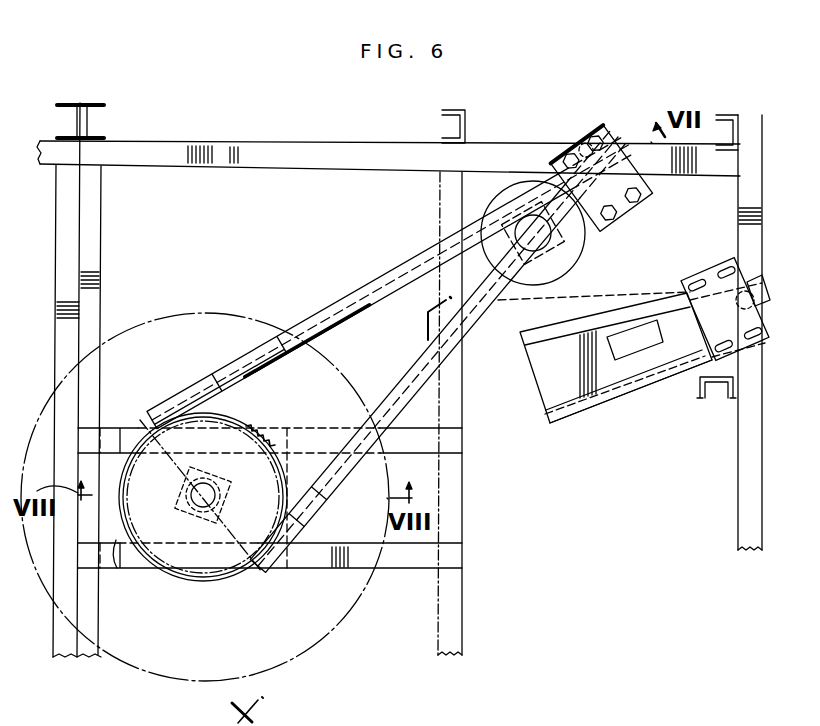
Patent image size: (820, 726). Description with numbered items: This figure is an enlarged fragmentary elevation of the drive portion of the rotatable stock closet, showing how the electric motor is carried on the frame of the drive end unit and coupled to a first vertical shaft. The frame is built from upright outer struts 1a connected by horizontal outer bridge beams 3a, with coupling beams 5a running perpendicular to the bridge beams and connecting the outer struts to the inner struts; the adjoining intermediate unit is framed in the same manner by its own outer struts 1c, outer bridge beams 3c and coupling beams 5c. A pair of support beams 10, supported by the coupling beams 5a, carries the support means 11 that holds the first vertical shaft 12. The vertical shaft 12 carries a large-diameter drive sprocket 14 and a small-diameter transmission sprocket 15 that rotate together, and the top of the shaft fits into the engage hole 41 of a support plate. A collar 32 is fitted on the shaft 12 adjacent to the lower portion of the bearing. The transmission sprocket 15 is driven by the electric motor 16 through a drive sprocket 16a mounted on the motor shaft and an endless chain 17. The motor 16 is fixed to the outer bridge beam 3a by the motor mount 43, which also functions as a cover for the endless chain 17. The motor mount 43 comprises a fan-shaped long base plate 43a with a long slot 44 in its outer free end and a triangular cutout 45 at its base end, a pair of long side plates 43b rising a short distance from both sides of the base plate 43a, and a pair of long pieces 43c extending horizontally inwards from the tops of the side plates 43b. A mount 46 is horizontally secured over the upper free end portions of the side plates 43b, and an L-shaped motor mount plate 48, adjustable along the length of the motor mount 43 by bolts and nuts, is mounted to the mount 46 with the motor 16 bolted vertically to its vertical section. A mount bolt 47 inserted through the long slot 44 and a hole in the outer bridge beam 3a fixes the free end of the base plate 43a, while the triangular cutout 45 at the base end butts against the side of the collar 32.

The outer struts 1a is at (93, 104).
The outer struts 1c is at (66, 103).
The outer bridge beams 3a is at (328, 144).
The outer bridge beams 3c is at (52, 150).
The coupling beams 5a is at (100, 238).
The coupling beams 5c is at (54, 240).
The support beams 10 is at (138, 426).
The support means 11 is at (117, 568).
The first vertical shaft 12 is at (192, 493).
The drive sprocket 14 is at (175, 322).
The transmission sprocket 15 is at (223, 580).
The electric motor 16 is at (575, 264).
The drive sprocket 16a is at (543, 291).
The endless chain 17 is at (371, 309).
The collar 32 is at (186, 503).
The engage hole 41 is at (659, 424).
The motor mount 43 is at (395, 270).
The base plate 43a is at (434, 360).
The side plates 43b is at (593, 404).
The long pieces 43c is at (420, 400).
The long slot 44 is at (636, 140).
The triangular cutout 45 is at (203, 503).
The mount 46 is at (716, 275).
The mount bolt 47 is at (578, 142).
The motor mount plate 48 is at (624, 212).